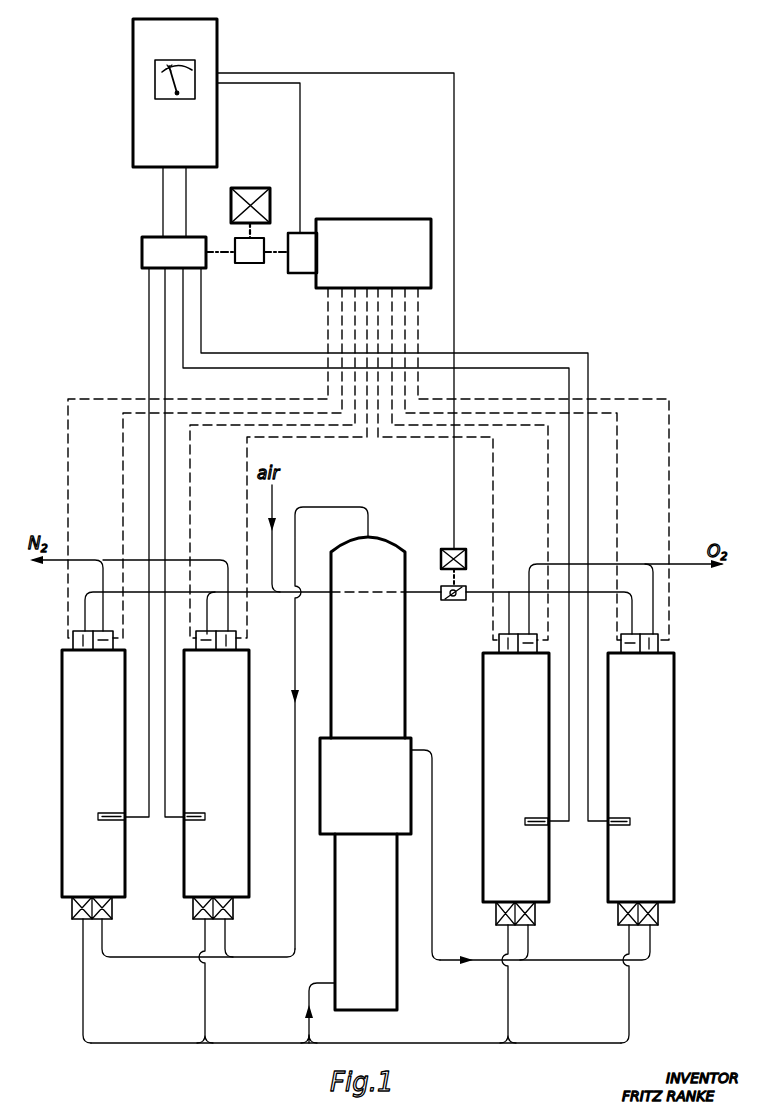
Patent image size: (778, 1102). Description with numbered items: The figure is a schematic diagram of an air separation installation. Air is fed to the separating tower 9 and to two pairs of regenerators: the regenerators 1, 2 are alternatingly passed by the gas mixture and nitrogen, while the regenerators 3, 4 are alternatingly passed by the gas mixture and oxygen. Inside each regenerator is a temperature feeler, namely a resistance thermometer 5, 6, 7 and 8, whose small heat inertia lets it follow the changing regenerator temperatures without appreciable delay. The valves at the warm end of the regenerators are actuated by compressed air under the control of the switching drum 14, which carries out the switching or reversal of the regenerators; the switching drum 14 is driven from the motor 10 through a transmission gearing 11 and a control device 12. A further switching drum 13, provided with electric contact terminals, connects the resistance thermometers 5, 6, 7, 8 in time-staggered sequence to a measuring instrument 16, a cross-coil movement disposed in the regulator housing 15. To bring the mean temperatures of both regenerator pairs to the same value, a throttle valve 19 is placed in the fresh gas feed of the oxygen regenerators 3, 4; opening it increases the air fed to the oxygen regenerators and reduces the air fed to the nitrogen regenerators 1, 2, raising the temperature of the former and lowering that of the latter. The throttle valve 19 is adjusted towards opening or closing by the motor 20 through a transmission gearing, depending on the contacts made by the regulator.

The regenerator 1 is at (178, 837).
The regenerator 2 is at (216, 837).
The regenerator 3 is at (516, 838).
The regenerator 4 is at (557, 838).
The resistance thermometer 5 is at (109, 827).
The resistance thermometer 6 is at (195, 827).
The resistance thermometer 7 is at (533, 832).
The resistance thermometer 8 is at (620, 832).
The separating tower 9 is at (365, 775).
The motor 10 is at (249, 188).
The transmission gearing 11 is at (255, 260).
The control device 12 is at (303, 265).
The switching drum 13 is at (174, 252).
The switching drum 14 is at (373, 253).
The regulator housing 15 is at (218, 52).
The measuring instrument 16 is at (155, 87).
The throttle valve 19 is at (452, 600).
The motor 20 is at (458, 549).